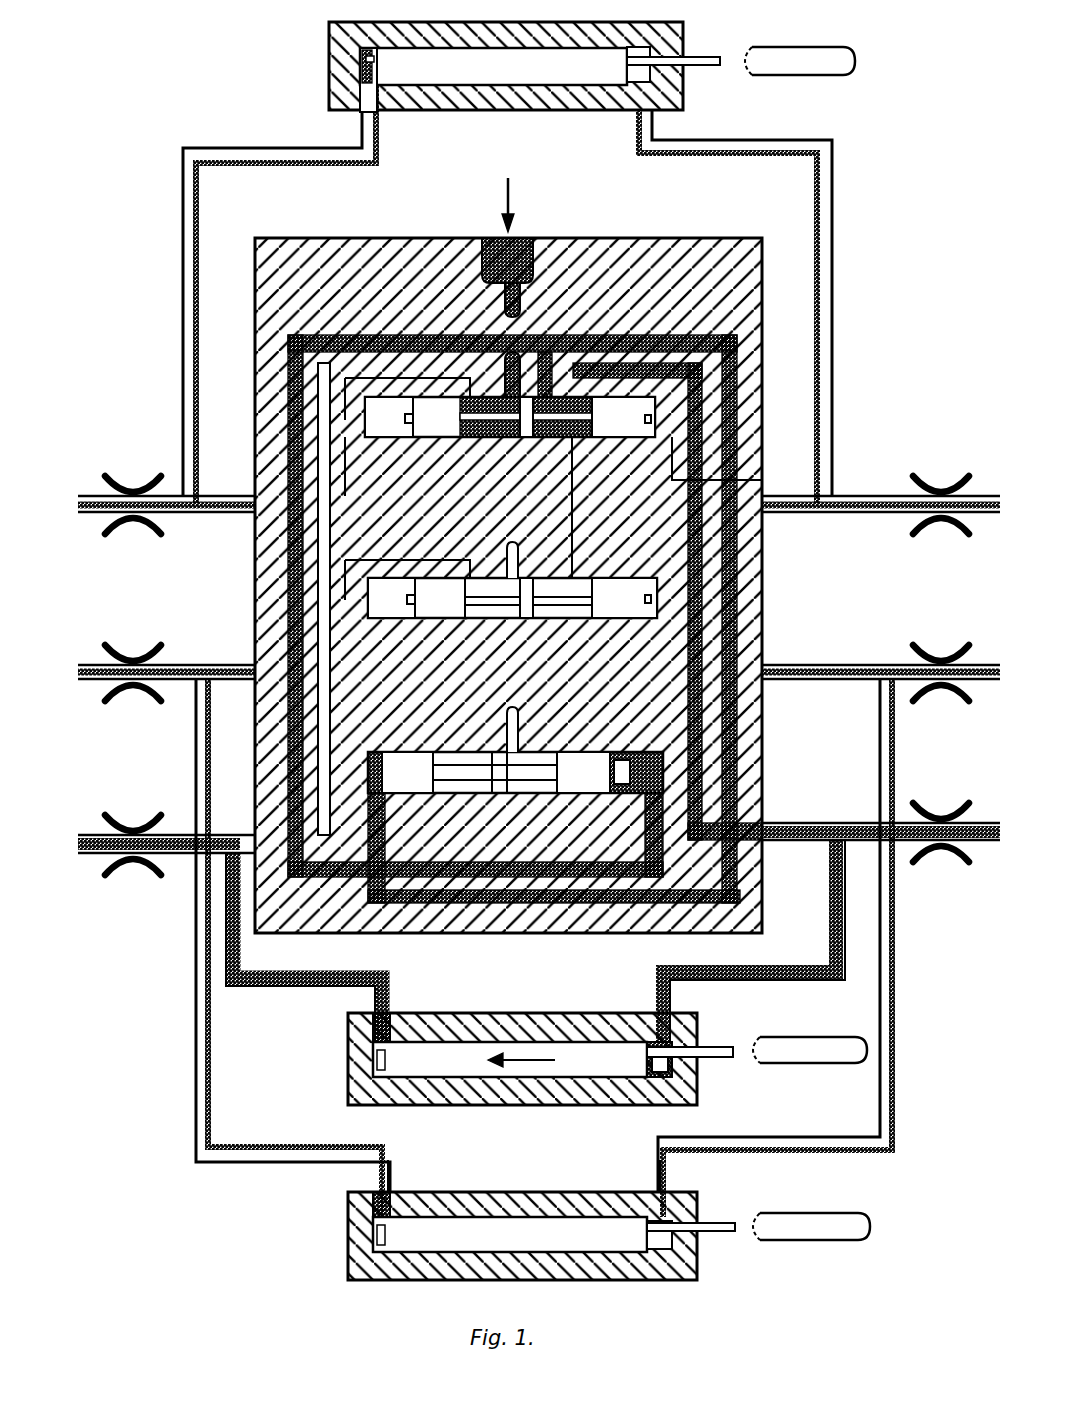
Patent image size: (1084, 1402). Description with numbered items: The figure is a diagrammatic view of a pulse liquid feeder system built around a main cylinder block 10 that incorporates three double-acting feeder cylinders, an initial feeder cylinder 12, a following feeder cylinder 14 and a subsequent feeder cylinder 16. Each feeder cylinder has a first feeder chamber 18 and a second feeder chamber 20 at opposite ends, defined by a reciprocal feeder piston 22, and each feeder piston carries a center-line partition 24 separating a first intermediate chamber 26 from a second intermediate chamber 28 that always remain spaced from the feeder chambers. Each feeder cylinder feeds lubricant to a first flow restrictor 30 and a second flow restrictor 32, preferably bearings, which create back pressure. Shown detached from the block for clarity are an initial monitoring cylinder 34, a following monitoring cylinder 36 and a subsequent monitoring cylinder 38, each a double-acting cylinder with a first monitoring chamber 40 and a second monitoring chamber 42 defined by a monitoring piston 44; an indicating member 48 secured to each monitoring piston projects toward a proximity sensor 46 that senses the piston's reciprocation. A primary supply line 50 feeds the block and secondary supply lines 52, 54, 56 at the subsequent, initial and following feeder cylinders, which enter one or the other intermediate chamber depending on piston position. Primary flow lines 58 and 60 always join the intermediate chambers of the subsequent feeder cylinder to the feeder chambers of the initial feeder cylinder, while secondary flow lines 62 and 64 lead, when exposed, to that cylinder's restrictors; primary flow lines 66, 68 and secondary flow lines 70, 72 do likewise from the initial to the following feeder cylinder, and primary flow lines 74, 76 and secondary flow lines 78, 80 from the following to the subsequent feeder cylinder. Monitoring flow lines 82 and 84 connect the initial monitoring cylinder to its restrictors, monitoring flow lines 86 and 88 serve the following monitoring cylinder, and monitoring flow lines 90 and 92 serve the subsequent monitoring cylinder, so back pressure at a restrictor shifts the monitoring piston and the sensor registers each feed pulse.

The main cylinder block 10 is at (268, 236).
The initial feeder cylinder 12 is at (383, 760).
The following feeder cylinder 14 is at (370, 585).
The subsequent feeder cylinder 16 is at (365, 400).
The first feeder chamber 18 is at (655, 410).
The second feeder chamber 20 is at (380, 415).
The feeder piston 22 is at (410, 420).
The center-line partition 24 is at (525, 413).
The first intermediate chamber 26 is at (590, 397).
The second intermediate chamber 28 is at (372, 440).
The first flow restrictor 30 is at (950, 476).
The second flow restrictor 32 is at (150, 476).
The initial monitoring cylinder 34 is at (360, 1045).
The following monitoring cylinder 36 is at (360, 1222).
The subsequent monitoring cylinder 38 is at (355, 57).
The first monitoring chamber 40 is at (655, 50).
The second monitoring chamber 42 is at (360, 82).
The monitoring piston 44 is at (467, 70).
The proximity sensor 46 is at (775, 60).
The indicating member 48 is at (690, 65).
The primary supply line 50 is at (505, 245).
The secondary supply line 52 is at (512, 355).
The secondary supply line 54 is at (520, 712).
The secondary supply line 56 is at (520, 548).
The primary flow line 58 is at (660, 365).
The primary flow line 60 is at (345, 378).
The secondary flow line 62 is at (695, 370).
The secondary flow line 64 is at (370, 335).
The primary flow line 66 is at (700, 610).
The primary flow line 68 is at (300, 655).
The secondary flow line 70 is at (880, 660).
The secondary flow line 72 is at (193, 660).
The primary flow line 74 is at (700, 430).
The primary flow line 76 is at (330, 445).
The secondary flow line 78 is at (740, 490).
The secondary flow line 80 is at (245, 496).
The monitoring flow line 82 is at (655, 1000).
The monitoring flow line 84 is at (388, 992).
The monitoring flow line 86 is at (657, 1168).
The monitoring flow line 88 is at (392, 1170).
The monitoring flow line 90 is at (722, 142).
The monitoring flow line 92 is at (240, 148).